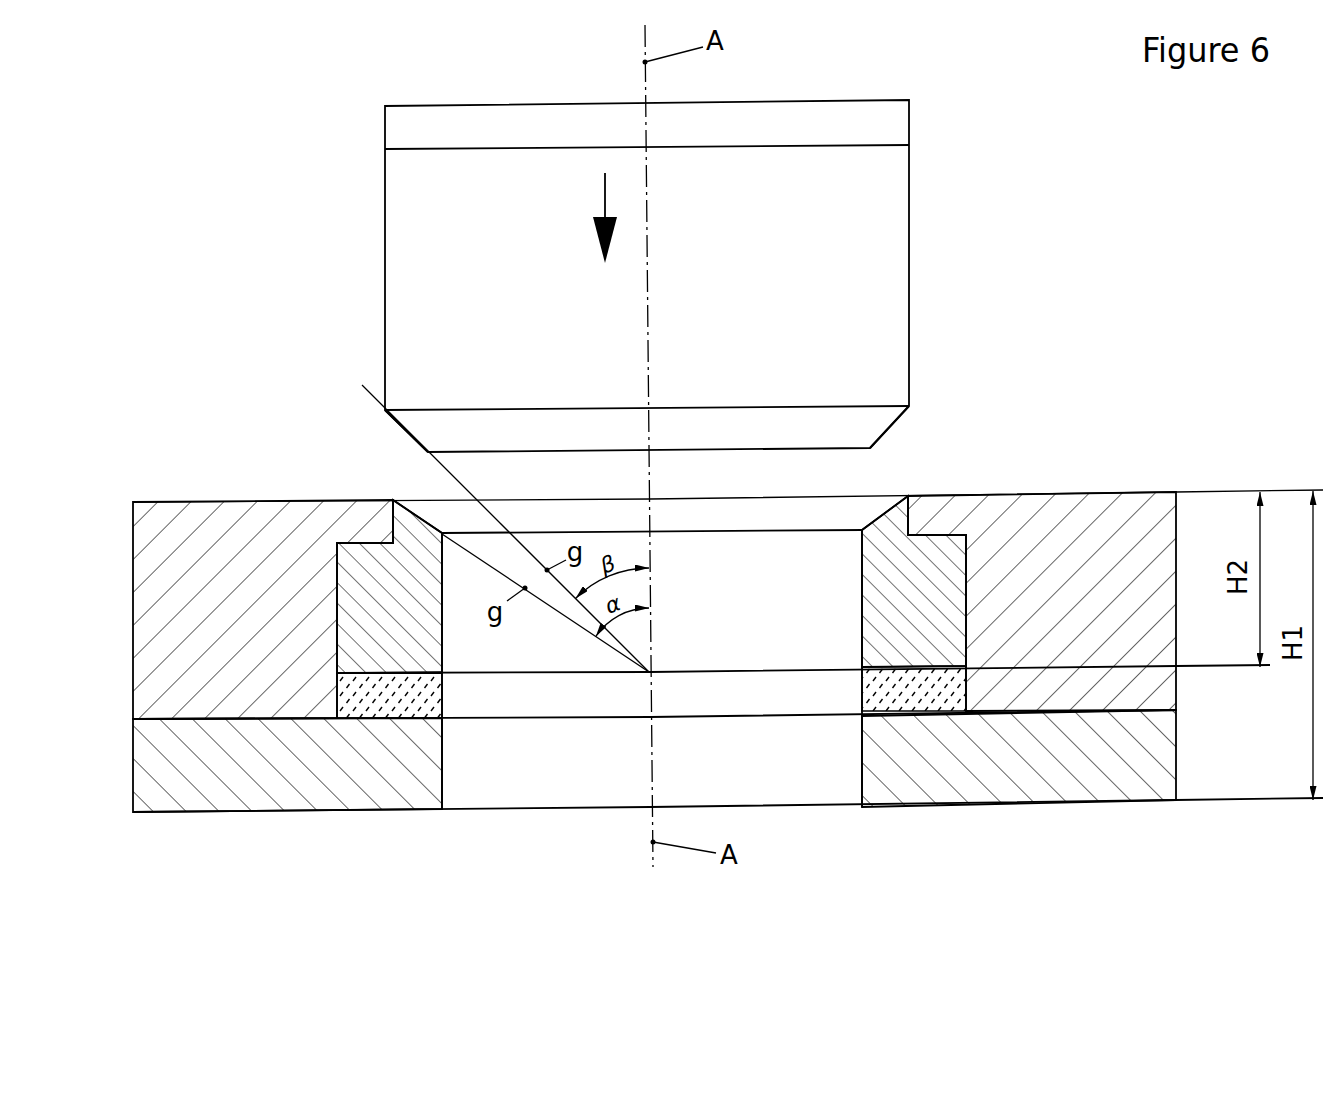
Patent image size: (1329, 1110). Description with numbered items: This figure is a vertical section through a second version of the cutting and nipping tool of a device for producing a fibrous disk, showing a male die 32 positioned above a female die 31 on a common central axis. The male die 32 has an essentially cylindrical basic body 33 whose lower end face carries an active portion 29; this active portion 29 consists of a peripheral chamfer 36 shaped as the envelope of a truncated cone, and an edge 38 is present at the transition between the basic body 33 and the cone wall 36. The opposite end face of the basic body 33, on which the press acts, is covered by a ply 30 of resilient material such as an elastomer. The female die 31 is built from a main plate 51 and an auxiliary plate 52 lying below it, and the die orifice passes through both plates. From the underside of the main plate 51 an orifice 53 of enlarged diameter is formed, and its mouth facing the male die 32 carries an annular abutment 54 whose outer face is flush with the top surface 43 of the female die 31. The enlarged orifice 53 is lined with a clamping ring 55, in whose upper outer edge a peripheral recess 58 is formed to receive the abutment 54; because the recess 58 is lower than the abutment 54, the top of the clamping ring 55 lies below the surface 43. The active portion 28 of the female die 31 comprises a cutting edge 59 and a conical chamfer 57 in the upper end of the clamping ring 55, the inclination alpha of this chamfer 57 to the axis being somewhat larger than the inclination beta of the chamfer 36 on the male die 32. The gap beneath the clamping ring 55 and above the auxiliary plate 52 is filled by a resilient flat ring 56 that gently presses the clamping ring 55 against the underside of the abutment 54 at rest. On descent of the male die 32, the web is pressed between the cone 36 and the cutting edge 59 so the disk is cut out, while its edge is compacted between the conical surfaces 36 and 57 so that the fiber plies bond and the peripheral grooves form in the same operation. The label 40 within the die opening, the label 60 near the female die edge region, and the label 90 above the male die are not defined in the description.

The active portion of the female die 28 is at (866, 516).
The active portion of the male die 29 is at (944, 391).
The ply 30 is at (432, 127).
The female die 31 is at (868, 446).
The male die 32 is at (433, 259).
The basic body of the male die 33 is at (580, 276).
The peripheral chamfer 36 is at (887, 427).
The edge 38 is at (387, 409).
The die opening 40 is at (652, 574).
The surface of the female die 43 is at (165, 500).
The main plate 51 is at (1130, 491).
The auxiliary plate 52 is at (967, 775).
The orifice with enlarged diameter 53 is at (319, 552).
The annular abutment 54 is at (350, 543).
The clamping ring 55 is at (653, 718).
The flat ring 56 is at (383, 700).
The chamfer 57 is at (411, 513).
The peripheral recess 58 is at (950, 537).
The cutting edge 59 is at (911, 492).
The cutting edge 60 is at (444, 530).
The pressing direction 90 is at (603, 202).